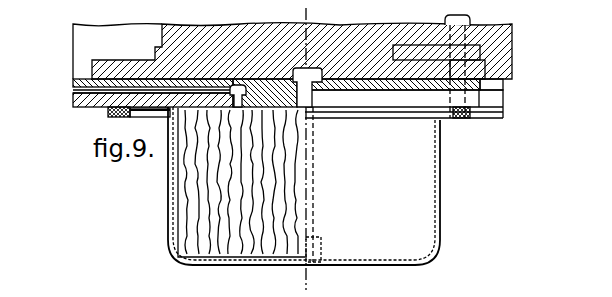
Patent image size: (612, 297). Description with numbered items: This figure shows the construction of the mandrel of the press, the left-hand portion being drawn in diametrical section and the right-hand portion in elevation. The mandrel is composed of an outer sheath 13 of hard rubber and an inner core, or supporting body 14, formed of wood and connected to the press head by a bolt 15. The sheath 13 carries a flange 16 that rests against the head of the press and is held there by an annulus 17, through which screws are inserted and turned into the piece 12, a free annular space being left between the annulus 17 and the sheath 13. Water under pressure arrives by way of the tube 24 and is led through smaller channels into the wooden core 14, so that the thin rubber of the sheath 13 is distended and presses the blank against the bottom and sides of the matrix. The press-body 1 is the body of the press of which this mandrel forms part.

The press-body 1 is at (292, 66).
The tube 24 is at (75, 90).
The piece 12 is at (231, 92).
The outer sheath 13 is at (304, 186).
The supporting body 14 is at (241, 182).
The bolt 15 is at (320, 254).
The flange 16 is at (493, 125).
The annulus 17 is at (461, 118).